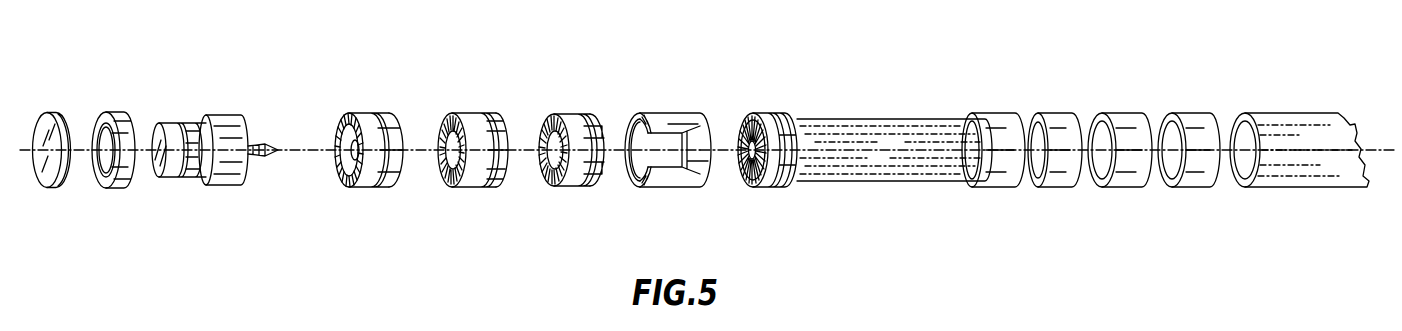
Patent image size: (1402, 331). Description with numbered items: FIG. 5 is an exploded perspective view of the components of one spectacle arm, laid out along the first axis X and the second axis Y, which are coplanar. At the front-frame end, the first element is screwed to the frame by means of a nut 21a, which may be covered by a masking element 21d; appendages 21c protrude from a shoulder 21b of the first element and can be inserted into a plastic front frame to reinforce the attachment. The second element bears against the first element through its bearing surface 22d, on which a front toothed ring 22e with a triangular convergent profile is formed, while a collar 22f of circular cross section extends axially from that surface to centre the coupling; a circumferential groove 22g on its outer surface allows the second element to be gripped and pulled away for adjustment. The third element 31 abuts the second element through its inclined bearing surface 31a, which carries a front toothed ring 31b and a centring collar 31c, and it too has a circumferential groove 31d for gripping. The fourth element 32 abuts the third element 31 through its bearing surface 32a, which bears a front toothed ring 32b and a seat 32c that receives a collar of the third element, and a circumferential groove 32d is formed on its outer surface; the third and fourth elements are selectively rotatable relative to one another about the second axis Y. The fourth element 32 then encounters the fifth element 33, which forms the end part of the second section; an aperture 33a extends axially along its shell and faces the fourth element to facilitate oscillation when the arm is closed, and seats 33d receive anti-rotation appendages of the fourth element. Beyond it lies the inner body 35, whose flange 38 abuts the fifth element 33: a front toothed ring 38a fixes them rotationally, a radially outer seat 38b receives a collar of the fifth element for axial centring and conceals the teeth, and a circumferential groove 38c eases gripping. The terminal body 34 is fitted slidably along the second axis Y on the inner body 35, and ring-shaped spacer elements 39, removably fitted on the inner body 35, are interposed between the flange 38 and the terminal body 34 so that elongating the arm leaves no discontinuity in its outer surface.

The nut 21a is at (118, 112).
The shoulder 21b is at (220, 187).
The appendages 21c is at (205, 118).
The masking element 21d is at (46, 112).
The first axis X is at (282, 148).
The second axis Y is at (730, 148).
The bearing surface 22d is at (340, 180).
The front toothed ring 22e is at (335, 140).
The collar 22f is at (353, 113).
The circumferential groove 22g is at (370, 188).
The third element 31 is at (444, 141).
The inclined bearing surface 31a is at (438, 125).
The front toothed ring 31b is at (458, 185).
The collar 31c is at (448, 177).
The circumferential groove 31d is at (493, 118).
The fourth element 32 is at (569, 140).
The bearing surface 32a is at (542, 120).
The front toothed ring 32b is at (545, 173).
The seat 32c is at (585, 183).
The circumferential groove 32d is at (592, 117).
The fifth element 33 is at (679, 140).
The aperture 33a is at (677, 188).
The seats 33d is at (628, 120).
The flange 38 is at (788, 140).
The front toothed ring 38a is at (743, 183).
The seat 38b is at (745, 120).
The circumferential groove 38c is at (778, 187).
The inner body 35 is at (930, 119).
The ring-shaped spacer elements 39 is at (995, 113).
The terminal body 34 is at (1287, 113).